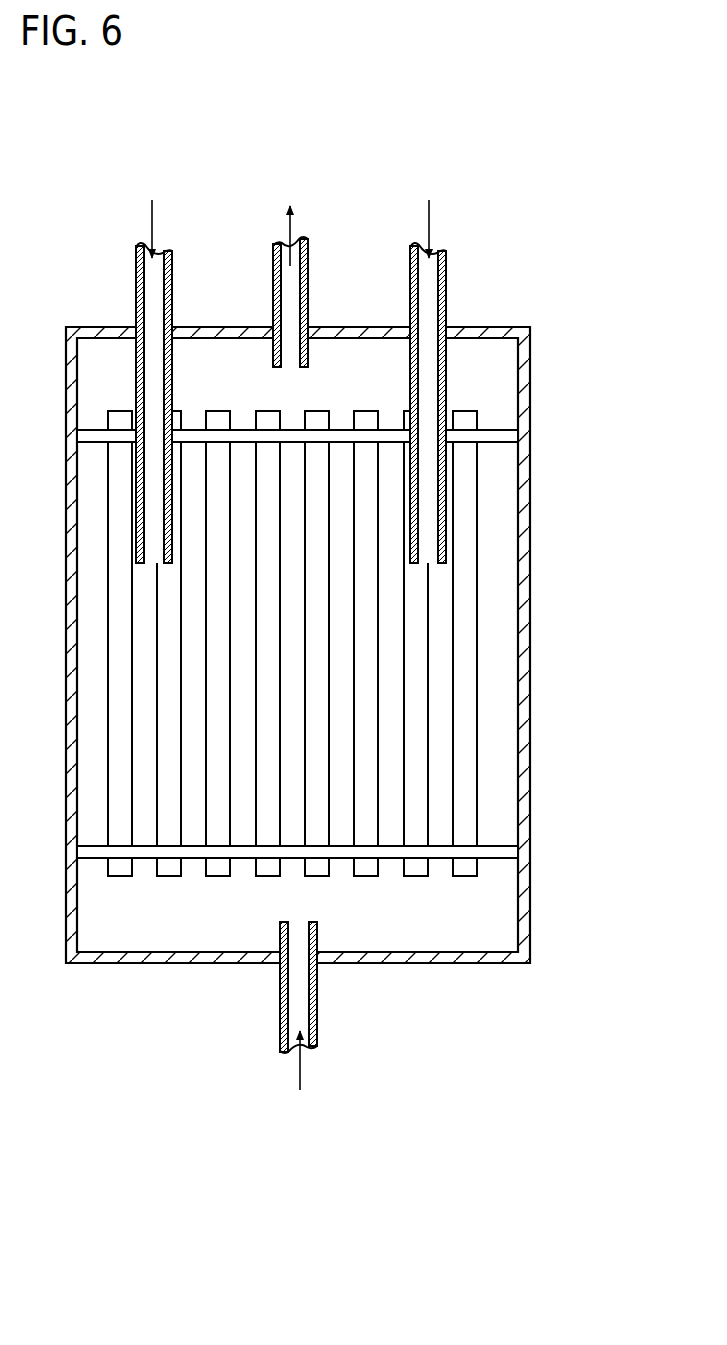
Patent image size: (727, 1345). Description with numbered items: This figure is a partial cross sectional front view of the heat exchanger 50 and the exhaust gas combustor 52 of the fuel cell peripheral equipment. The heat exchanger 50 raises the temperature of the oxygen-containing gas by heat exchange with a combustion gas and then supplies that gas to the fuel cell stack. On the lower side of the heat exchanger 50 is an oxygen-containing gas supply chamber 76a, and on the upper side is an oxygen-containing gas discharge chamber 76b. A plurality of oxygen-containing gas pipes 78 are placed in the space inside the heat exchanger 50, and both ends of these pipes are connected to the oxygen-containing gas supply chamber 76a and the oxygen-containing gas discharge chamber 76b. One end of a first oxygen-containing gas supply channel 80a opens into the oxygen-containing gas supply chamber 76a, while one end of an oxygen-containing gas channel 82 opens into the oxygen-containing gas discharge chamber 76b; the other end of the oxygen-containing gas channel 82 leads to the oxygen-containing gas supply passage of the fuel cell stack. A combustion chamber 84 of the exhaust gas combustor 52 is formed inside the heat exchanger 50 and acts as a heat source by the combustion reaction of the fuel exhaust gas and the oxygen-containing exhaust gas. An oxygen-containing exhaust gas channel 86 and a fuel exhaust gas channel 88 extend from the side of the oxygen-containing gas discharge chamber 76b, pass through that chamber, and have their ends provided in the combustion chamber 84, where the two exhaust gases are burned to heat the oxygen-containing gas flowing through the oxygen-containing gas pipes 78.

The heat exchanger 50 is at (256, 57).
The exhaust gas combustor 52 is at (497, 524).
The oxygen-containing gas supply chamber 76a is at (495, 905).
The oxygen-containing gas discharge chamber 76b is at (495, 377).
The oxygen-containing gas pipes 78 is at (465, 647).
The first oxygen-containing gas supply channel 80a is at (297, 1011).
The oxygen-containing gas channel 82 is at (273, 283).
The combustion chamber 84 is at (345, 605).
The oxygen-containing exhaust gas channel 86 is at (410, 286).
The fuel exhaust gas channel 88 is at (136, 283).